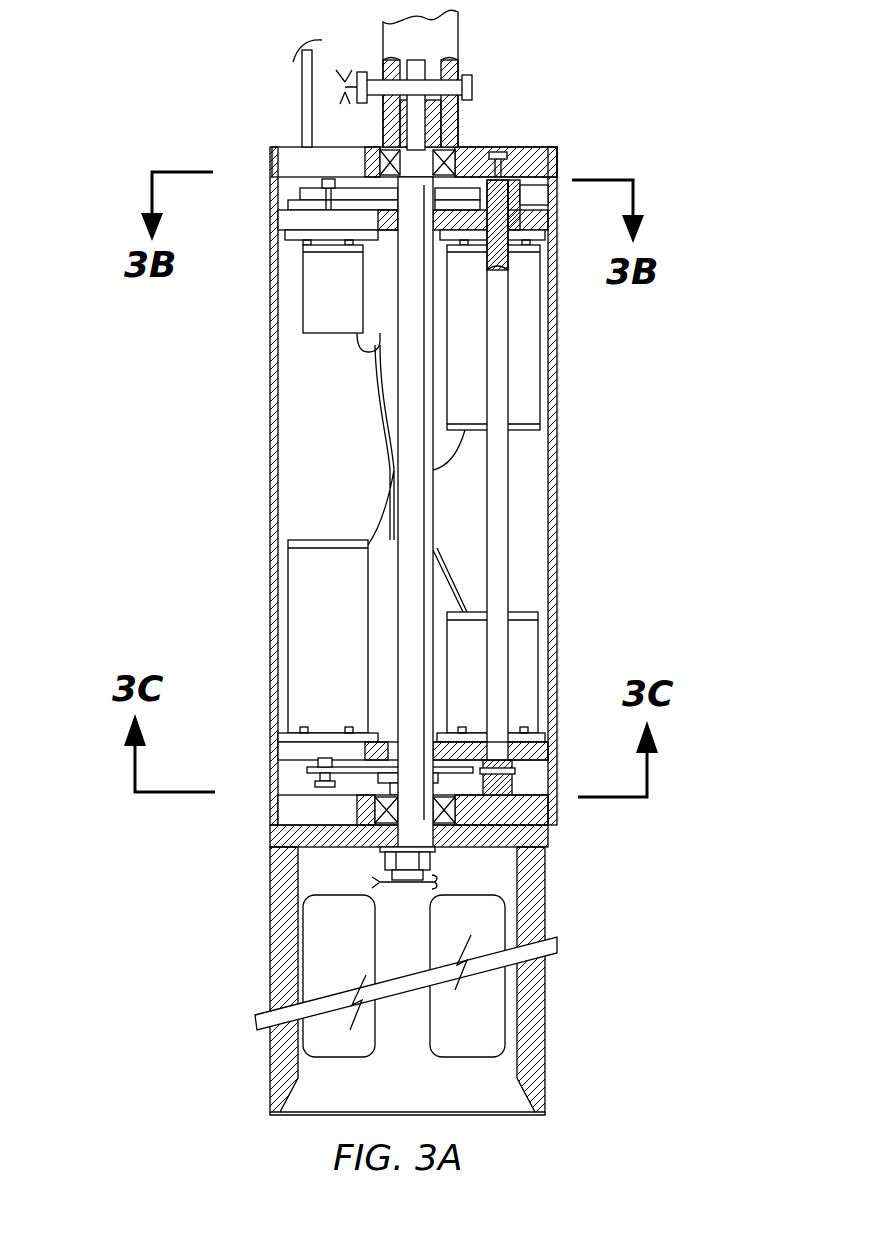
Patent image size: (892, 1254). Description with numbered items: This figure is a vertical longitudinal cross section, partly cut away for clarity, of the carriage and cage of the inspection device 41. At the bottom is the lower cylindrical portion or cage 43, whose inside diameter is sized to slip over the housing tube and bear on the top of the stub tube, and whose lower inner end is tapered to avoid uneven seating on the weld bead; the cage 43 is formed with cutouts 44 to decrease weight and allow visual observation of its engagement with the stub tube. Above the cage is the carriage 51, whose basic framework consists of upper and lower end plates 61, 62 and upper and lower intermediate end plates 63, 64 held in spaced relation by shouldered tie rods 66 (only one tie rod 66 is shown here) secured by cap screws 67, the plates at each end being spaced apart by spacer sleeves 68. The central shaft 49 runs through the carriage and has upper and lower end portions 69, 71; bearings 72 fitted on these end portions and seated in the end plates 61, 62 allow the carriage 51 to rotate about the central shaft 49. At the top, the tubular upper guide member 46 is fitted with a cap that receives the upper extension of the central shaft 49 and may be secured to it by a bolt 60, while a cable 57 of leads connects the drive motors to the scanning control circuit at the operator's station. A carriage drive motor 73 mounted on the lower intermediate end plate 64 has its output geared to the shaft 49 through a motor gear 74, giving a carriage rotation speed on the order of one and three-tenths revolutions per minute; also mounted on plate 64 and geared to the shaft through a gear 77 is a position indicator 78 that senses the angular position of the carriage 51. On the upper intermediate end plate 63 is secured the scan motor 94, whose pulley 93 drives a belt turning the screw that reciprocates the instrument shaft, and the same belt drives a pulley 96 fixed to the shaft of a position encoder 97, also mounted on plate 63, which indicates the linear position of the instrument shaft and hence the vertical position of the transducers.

The inspection device 41 is at (236, 151).
The cage 43 is at (262, 953).
The cutouts 44 is at (350, 956).
The tubular upper guide member 46 is at (452, 45).
The central shaft 49 is at (422, 520).
The carriage 51 is at (262, 383).
The cable 57 is at (302, 75).
The bolt 60 is at (470, 85).
The upper end plate 61 is at (285, 147).
The lower end plate 62 is at (290, 806).
The upper intermediate end plate 63 is at (290, 205).
The lower intermediate end plate 64 is at (285, 770).
The shouldered tie rod 66 is at (510, 525).
The cap screw 67 is at (497, 150).
The spacer sleeve 68 is at (548, 205).
The upper end portion 69 is at (412, 121).
The lower end portion 71 is at (400, 835).
The bearing 72 is at (440, 810).
The carriage drive motor 73 is at (290, 587).
The motor gear 74 is at (300, 774).
The gear 77 is at (546, 772).
The position indicator 78 is at (530, 630).
The pulley 93 is at (550, 185).
The scan motor 94 is at (530, 440).
The pulley 96 is at (300, 192).
The position encoder 97 is at (303, 290).